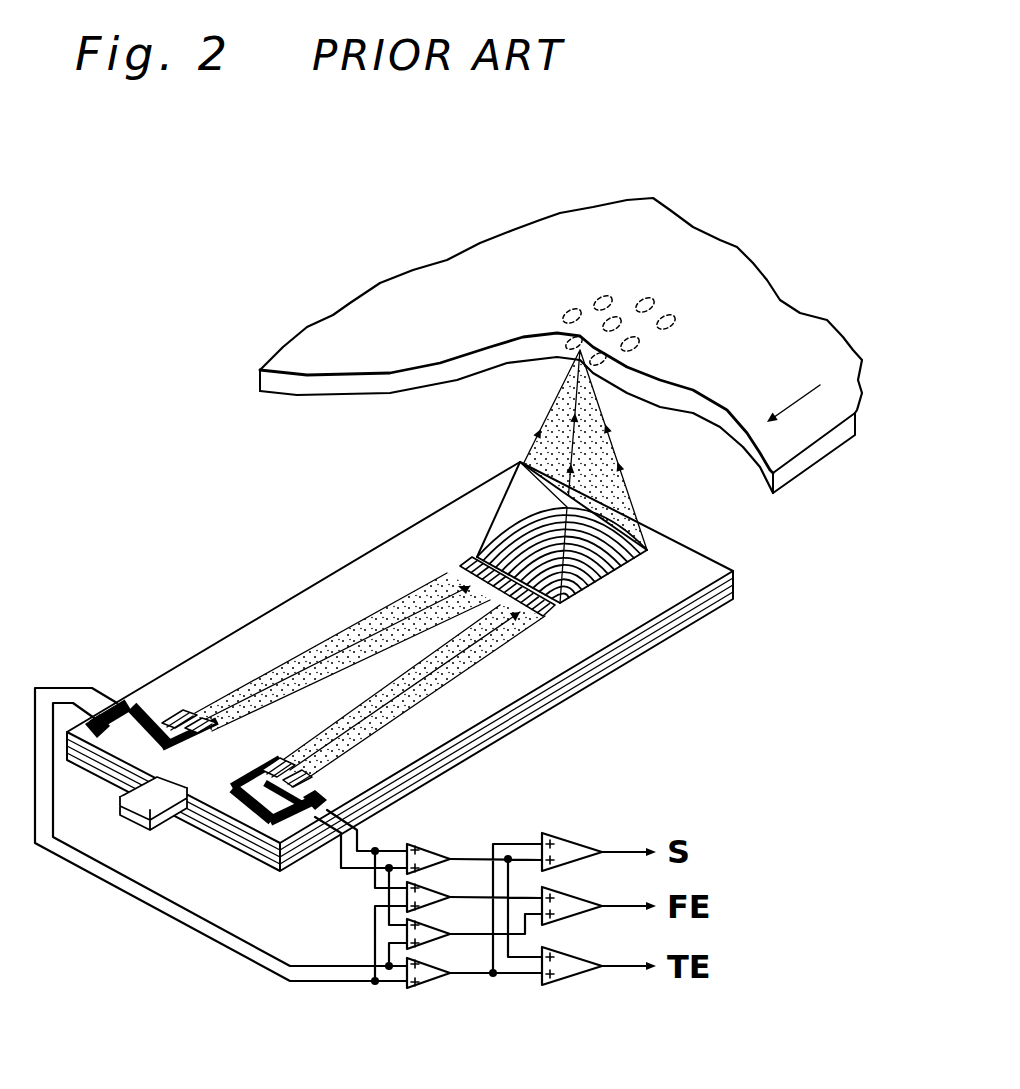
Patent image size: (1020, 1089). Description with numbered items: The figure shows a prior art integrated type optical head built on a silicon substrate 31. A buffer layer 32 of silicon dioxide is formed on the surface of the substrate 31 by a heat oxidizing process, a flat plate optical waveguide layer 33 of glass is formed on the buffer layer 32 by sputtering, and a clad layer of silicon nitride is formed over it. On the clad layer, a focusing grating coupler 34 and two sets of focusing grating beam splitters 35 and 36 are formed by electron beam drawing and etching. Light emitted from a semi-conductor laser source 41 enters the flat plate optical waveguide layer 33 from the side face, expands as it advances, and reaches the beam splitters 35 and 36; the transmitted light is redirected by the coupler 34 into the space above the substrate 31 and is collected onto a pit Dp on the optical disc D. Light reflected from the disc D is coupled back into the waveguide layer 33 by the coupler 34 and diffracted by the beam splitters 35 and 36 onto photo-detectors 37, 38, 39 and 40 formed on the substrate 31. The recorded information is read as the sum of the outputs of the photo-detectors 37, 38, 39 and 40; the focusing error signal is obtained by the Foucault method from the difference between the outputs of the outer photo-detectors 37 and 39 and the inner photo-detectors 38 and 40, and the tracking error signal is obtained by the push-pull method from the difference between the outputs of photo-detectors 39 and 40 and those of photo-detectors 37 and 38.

The silicon substrate 31 is at (547, 700).
The buffer layer 32 is at (593, 675).
The flat plate optical waveguide layer 33 is at (640, 652).
The focusing grating coupler 34 is at (502, 516).
The focusing grating beam splitter 35 is at (460, 566).
The focusing grating beam splitter 36 is at (503, 603).
The photo-detector 37 is at (180, 712).
The photo-detector 38 is at (205, 715).
The photo-detector 39 is at (302, 775).
The photo-detector 40 is at (307, 760).
The semi-conductor laser source 41 is at (123, 820).
The optical disc D is at (297, 387).
The pit Dp is at (552, 316).